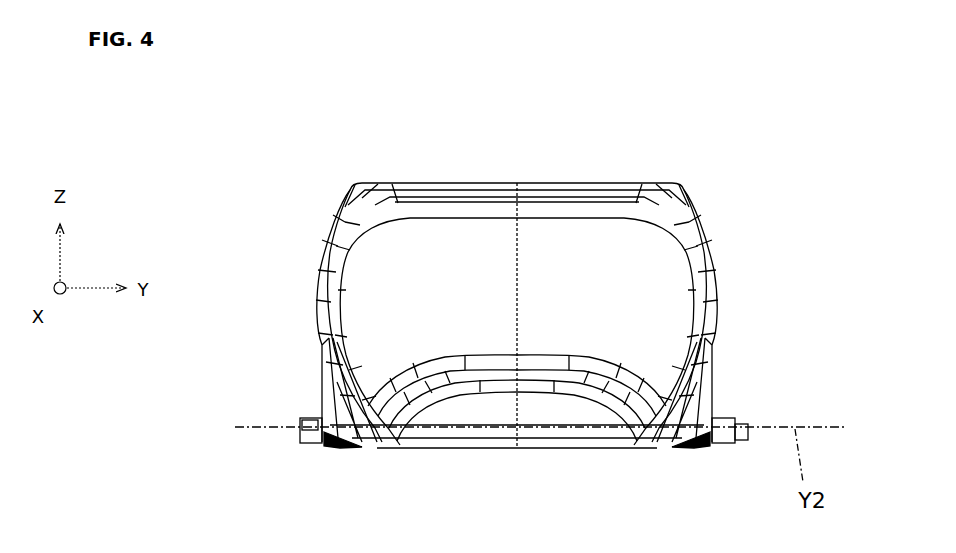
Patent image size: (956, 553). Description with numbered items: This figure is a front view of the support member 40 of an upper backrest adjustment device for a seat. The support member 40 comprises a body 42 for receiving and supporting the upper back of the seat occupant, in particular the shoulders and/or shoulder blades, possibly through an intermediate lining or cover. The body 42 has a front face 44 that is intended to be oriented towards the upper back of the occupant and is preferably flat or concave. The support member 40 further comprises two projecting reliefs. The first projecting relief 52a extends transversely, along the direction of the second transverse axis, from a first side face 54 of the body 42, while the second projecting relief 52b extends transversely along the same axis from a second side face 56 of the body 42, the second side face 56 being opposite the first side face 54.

The support member 40 is at (278, 192).
The body 42 is at (703, 263).
The front face 44 is at (557, 255).
The first side face 54 is at (320, 390).
The second side face 56 is at (720, 395).
The first projecting relief 52a is at (302, 418).
The second projecting relief 52b is at (733, 420).